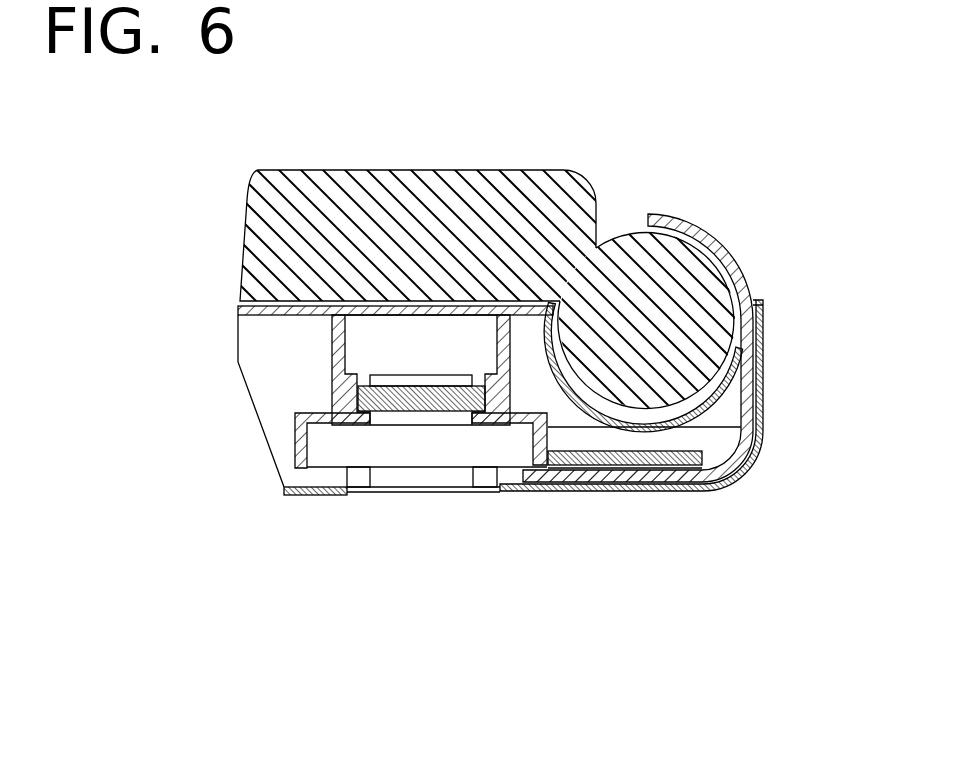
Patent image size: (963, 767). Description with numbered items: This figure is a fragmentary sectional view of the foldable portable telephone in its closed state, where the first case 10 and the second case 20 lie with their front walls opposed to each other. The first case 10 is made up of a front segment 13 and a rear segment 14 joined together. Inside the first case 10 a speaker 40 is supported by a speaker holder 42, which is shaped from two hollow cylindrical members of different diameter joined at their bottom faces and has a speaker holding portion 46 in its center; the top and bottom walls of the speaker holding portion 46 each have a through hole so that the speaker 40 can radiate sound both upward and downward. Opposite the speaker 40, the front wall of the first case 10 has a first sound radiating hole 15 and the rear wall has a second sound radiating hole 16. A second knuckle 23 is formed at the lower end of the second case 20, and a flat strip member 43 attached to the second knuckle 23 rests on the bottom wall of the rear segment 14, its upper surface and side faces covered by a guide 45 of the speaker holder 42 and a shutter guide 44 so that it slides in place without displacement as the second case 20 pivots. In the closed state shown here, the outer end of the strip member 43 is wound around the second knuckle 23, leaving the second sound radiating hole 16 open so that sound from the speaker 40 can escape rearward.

The first case 10 is at (706, 400).
The front segment 13 is at (765, 354).
The rear segment 14 is at (858, 338).
The first sound radiating hole 15 is at (370, 302).
The second sound radiating hole 16 is at (358, 492).
The second case 20 is at (438, 182).
The second knuckle 23 is at (678, 276).
The speaker 40 is at (415, 412).
The speaker holder 42 is at (295, 431).
The strip member 43 is at (588, 484).
The shutter guide 44 is at (672, 466).
The guide 45 is at (342, 476).
The speaker holding portion 46 is at (468, 412).